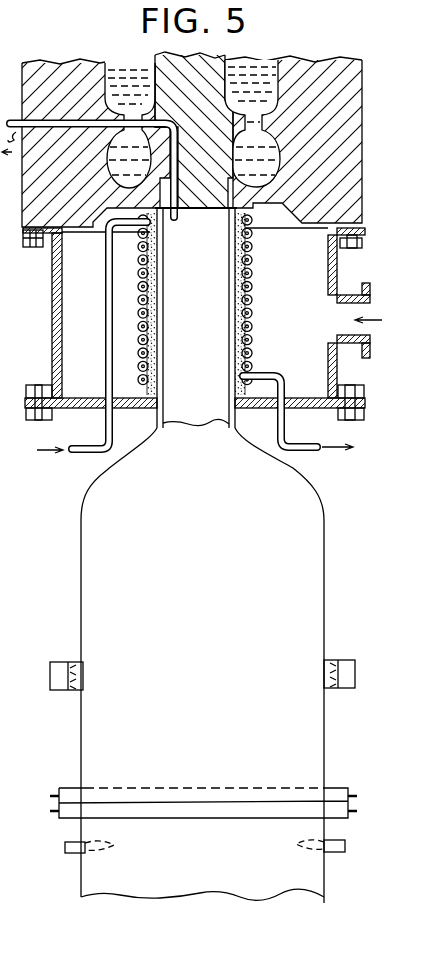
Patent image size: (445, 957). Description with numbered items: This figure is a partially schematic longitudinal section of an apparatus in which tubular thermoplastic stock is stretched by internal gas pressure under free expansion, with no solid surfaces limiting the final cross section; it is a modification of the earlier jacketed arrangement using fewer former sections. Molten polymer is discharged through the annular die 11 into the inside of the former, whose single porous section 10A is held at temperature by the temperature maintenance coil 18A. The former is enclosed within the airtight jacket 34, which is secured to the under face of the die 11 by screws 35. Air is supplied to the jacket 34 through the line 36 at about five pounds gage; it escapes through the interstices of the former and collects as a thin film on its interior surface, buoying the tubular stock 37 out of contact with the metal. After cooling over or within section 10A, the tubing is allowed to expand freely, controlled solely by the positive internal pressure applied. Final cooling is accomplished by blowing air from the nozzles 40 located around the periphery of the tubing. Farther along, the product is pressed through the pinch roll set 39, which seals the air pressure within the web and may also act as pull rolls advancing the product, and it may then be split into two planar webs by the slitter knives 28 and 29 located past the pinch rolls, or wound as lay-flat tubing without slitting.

The annular die 11 is at (162, 213).
The former section 10A is at (251, 249).
The temperature maintenance coil 18A is at (250, 262).
The airtight jacket 34 is at (292, 316).
The screws 35 is at (42, 250).
The line 36 is at (368, 346).
The tubular stock 37 is at (164, 322).
The nozzles 40 is at (352, 660).
The pinch roll set 39 is at (348, 790).
The slitter knife 28 is at (64, 850).
The slitter knife 29 is at (346, 848).